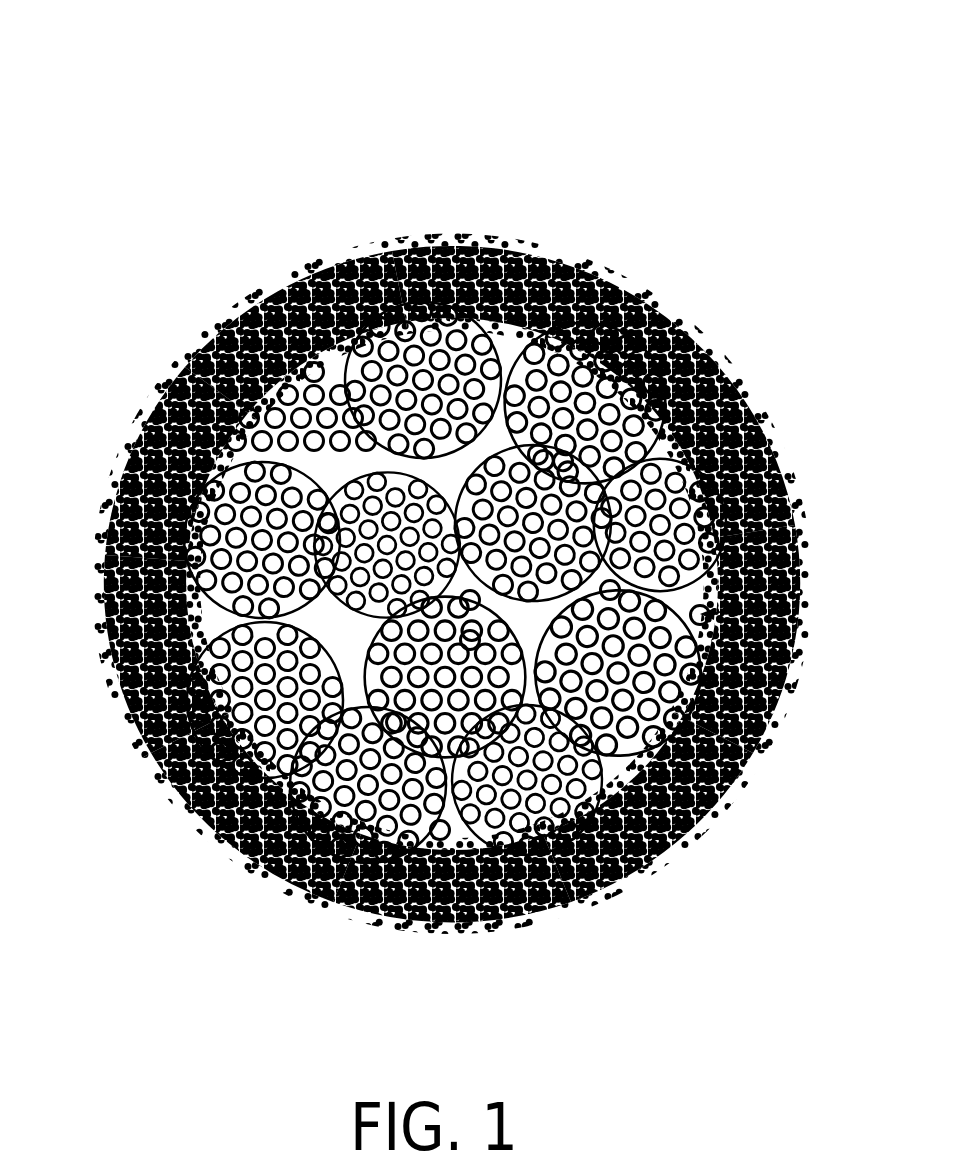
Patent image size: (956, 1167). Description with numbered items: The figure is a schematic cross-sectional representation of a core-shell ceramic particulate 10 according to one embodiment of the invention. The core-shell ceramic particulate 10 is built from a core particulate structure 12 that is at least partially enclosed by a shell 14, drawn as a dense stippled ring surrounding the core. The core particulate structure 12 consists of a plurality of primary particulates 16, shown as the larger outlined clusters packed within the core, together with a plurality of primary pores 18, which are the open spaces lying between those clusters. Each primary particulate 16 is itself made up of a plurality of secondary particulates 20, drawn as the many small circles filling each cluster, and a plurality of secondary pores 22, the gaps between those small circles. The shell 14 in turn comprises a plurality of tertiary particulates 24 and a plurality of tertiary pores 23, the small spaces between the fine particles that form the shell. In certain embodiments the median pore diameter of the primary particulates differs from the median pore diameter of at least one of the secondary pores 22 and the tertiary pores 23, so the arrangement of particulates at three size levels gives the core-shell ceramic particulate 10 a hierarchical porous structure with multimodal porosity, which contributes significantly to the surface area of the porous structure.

The core-shell ceramic particulate 10 is at (748, 92).
The core particulate structure 12 is at (788, 662).
The shell 14 is at (668, 284).
The primary particulates 16 is at (697, 806).
The primary pores 18 is at (103, 600).
The secondary particulates 20 is at (153, 765).
The secondary pores 22 is at (128, 465).
The tertiary pores 23 is at (240, 318).
The tertiary particulates 24 is at (497, 922).